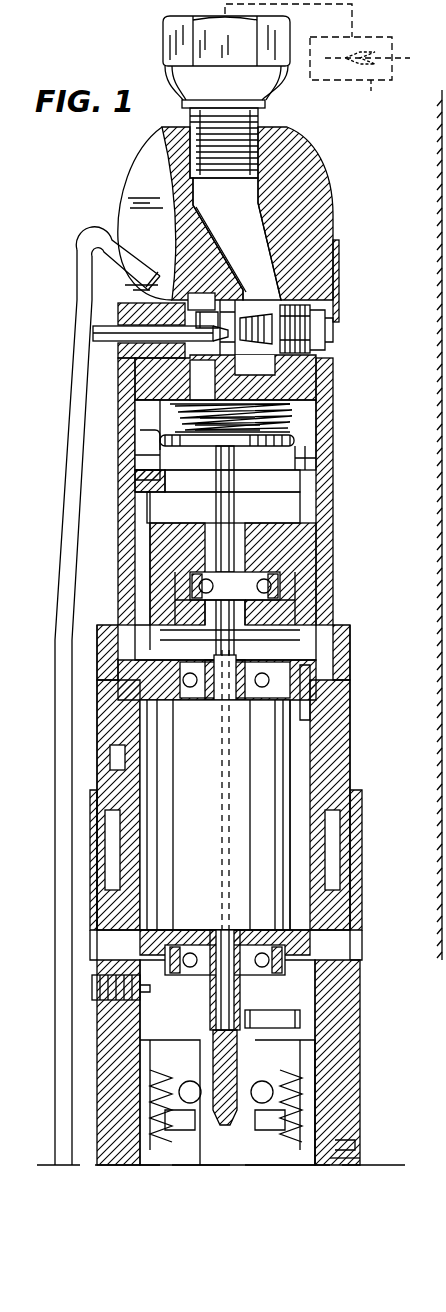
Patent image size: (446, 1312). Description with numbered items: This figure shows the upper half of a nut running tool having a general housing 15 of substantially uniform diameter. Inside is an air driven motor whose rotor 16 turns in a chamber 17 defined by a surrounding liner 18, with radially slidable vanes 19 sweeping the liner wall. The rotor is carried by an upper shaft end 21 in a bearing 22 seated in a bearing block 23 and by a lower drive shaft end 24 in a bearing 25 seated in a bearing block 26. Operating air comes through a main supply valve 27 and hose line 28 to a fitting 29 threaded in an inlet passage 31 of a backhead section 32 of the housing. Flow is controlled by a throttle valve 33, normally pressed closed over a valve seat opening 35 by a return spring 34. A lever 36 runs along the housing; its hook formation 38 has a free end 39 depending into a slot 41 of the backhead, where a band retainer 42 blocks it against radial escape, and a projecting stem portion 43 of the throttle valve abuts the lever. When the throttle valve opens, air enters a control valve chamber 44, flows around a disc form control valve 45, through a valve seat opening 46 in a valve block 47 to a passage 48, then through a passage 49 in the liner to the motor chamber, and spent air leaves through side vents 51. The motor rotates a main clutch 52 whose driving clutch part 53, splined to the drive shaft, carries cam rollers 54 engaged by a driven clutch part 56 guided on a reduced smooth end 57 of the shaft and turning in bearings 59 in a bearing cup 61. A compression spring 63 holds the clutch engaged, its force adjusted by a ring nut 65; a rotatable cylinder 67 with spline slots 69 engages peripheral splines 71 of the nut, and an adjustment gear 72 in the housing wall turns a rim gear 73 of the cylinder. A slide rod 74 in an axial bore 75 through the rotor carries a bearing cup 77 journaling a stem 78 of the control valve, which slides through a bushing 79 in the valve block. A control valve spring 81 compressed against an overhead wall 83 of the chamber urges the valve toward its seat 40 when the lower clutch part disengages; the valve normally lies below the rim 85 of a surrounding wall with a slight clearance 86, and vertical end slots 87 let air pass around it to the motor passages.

The housing 15 is at (334, 149).
The rotor 16 is at (205, 854).
The chamber 17 is at (285, 836).
The liner 18 is at (306, 767).
The air driven vanes 19 is at (266, 858).
The upper shaft end 21 is at (206, 716).
The bearing 22 is at (223, 652).
The bearing block 23 is at (306, 705).
The lower drive shaft end 24 is at (218, 920).
The bearing 25 is at (285, 962).
The bearing block 26 is at (350, 928).
The main supply valve 27 is at (360, 74).
The hose line 28 is at (360, 33).
The fitting 29 is at (167, 38).
The inlet passage 31 is at (262, 194).
The backhead section 32 is at (334, 222).
The throttle valve 33 is at (258, 296).
The return spring 34 is at (290, 294).
The valve seat opening 35 is at (222, 300).
The lever 36 is at (67, 458).
The hook formation 38 is at (94, 217).
The free end 39 is at (150, 256).
The seat 40 is at (298, 464).
The slot 41 is at (135, 173).
The band retainer 42 is at (340, 258).
The stem portion 43 is at (95, 313).
The control valve chamber 44 is at (135, 418).
The control valve 45 is at (296, 440).
The valve seat opening 46 is at (272, 483).
The valve block 47 is at (318, 511).
The passage 48 is at (145, 540).
The passage 49 is at (145, 735).
The side vents 51 is at (118, 850).
The main clutch 52 is at (325, 992).
The driving clutch part 53 is at (330, 1005).
The cam rollers 54 is at (280, 1030).
The driven clutch part 56 is at (300, 1086).
The extended reduced smooth end 57 is at (198, 1072).
The bearings 59 is at (178, 1095).
The bearing cup 61 is at (280, 1104).
The compression spring 63 is at (300, 1093).
The ring nut 65 is at (180, 1120).
The rotatable cylinder 67 is at (305, 1063).
The spline slots 69 is at (340, 1146).
The peripheral splines 71 is at (332, 1158).
The adjustment gear 72 is at (125, 977).
The rim gear 73 is at (125, 1010).
The slide rod 74 is at (229, 640).
The axial bore 75 is at (220, 788).
The bearing cup 77 is at (258, 602).
The cylindrical stem 78 is at (228, 546).
The bushing 79 is at (248, 516).
The control valve spring 81 is at (292, 410).
The overhead wall 83 is at (165, 403).
The rim 85 is at (249, 423).
The clearance 86 is at (150, 432).
The vertical end slots 87 is at (140, 455).